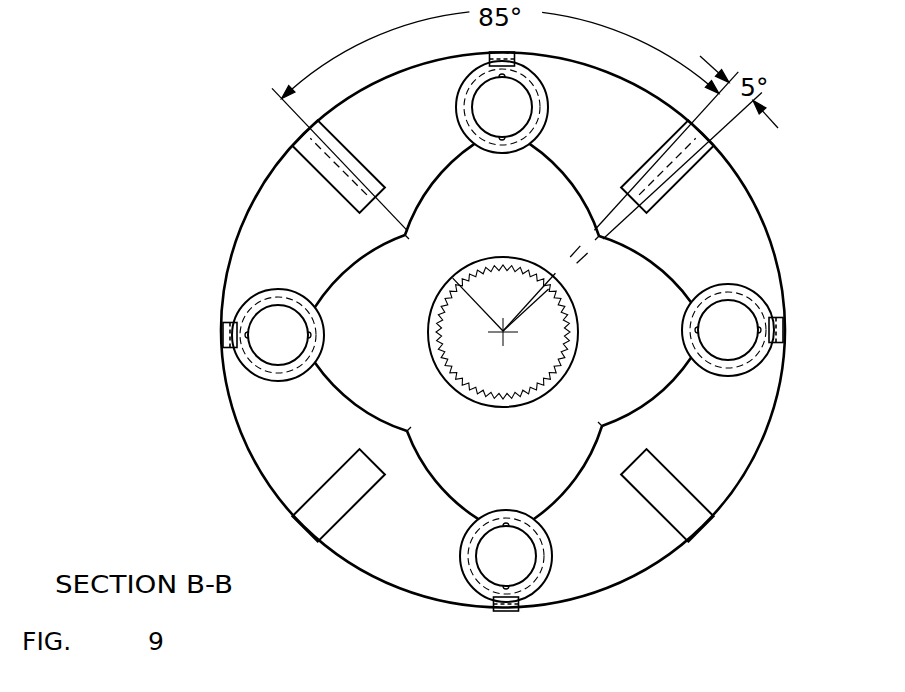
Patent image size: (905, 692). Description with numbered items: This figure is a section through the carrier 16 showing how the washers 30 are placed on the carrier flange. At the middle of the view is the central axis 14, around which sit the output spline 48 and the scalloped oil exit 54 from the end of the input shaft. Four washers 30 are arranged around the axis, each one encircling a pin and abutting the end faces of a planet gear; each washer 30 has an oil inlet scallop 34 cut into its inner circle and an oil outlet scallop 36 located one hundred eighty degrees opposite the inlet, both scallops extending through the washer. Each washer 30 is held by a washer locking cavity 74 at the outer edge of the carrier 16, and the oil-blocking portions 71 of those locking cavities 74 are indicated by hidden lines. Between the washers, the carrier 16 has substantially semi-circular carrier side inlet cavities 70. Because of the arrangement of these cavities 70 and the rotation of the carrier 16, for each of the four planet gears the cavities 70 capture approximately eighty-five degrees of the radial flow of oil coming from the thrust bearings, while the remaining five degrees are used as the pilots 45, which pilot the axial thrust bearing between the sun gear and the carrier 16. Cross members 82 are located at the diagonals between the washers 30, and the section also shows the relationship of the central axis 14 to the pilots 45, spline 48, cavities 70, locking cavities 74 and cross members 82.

The central axis 14 is at (502, 335).
The carrier 16 is at (240, 512).
The washer 30 is at (548, 108).
The oil inlet scallop 34 is at (506, 520).
The oil outlet scallop 36 is at (510, 585).
The pilot 45 is at (408, 237).
The output spline 48 is at (440, 301).
The scalloped oil exit 54 is at (500, 408).
The carrier side inlet cavity 70 is at (522, 194).
The oil-blocking portion 71 is at (470, 87).
The washer locking cavity 74 is at (502, 53).
The cross member 82 is at (350, 160).